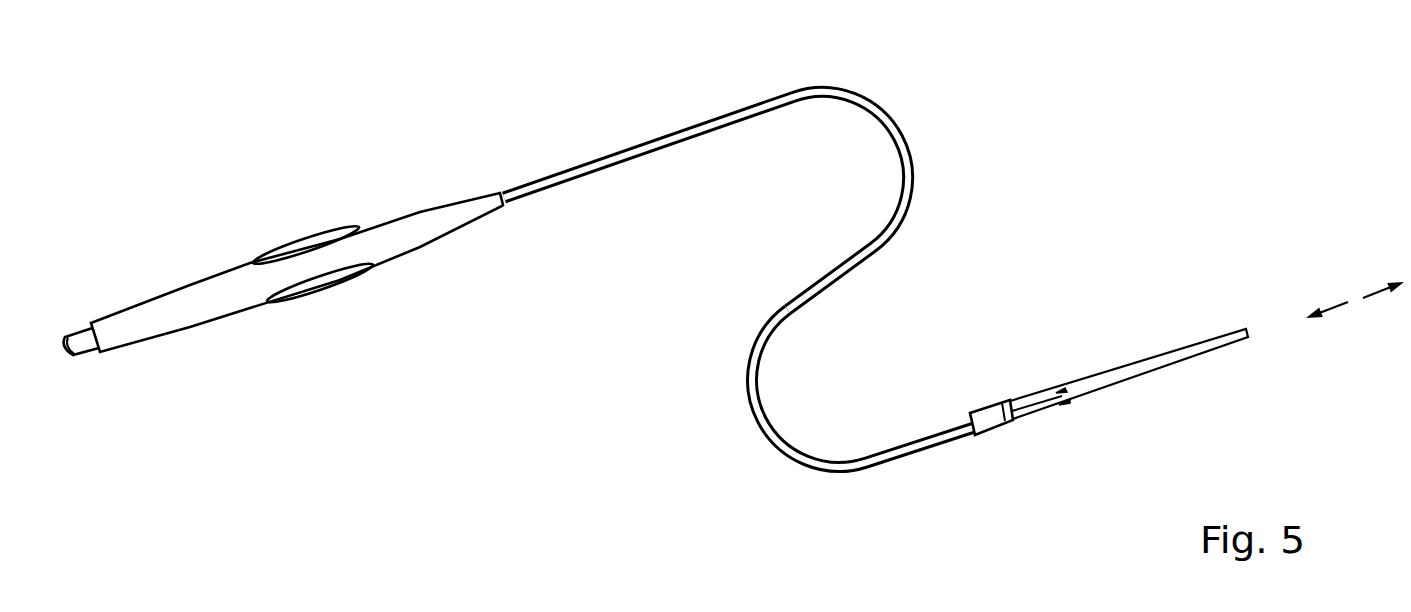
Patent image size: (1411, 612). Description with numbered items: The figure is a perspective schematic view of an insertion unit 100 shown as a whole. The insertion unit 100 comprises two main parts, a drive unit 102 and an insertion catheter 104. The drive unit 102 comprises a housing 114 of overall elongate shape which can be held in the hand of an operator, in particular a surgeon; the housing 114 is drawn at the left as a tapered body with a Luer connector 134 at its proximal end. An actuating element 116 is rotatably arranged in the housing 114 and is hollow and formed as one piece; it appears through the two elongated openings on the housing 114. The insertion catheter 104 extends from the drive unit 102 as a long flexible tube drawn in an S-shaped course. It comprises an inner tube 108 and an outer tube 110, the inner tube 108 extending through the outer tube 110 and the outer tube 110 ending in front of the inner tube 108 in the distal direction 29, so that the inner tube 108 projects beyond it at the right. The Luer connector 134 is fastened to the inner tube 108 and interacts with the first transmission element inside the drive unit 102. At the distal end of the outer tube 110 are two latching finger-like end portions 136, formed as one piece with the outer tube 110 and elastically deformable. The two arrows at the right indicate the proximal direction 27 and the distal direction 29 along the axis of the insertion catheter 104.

The insertion unit 100 is at (216, 121).
The drive unit 102 is at (282, 300).
The insertion catheter 104 is at (726, 102).
The inner tube 108 is at (1202, 345).
The outer tube 110 is at (817, 467).
The housing 114 is at (177, 320).
The actuating element 116 is at (305, 243).
The Luer connector 134 is at (75, 343).
The latching finger-like end portions 136 is at (1062, 388).
The proximal direction 27 is at (1337, 300).
The distal direction 29 is at (1378, 295).